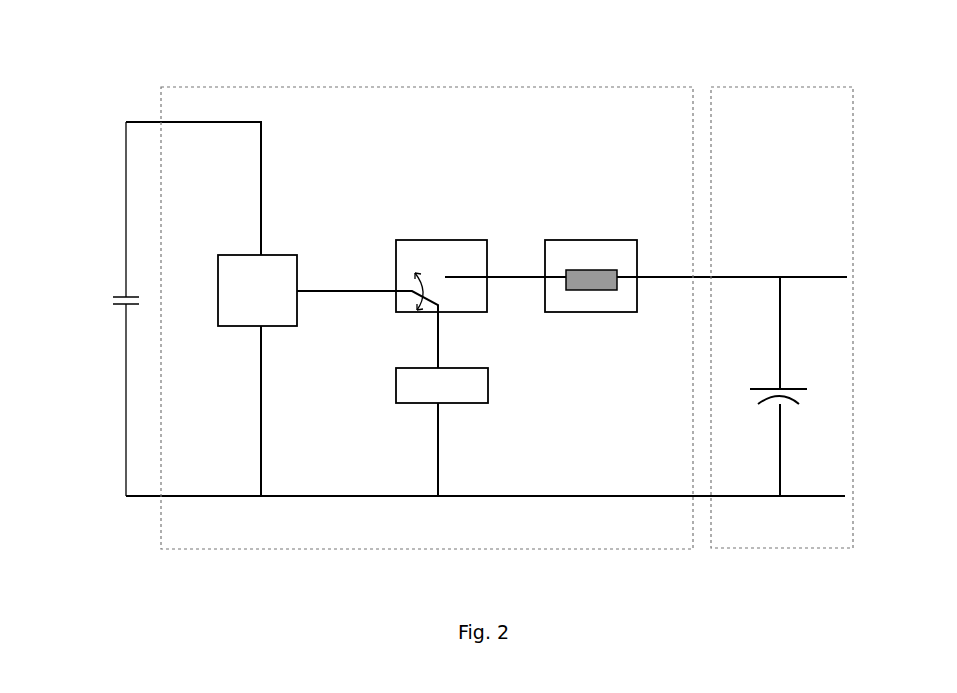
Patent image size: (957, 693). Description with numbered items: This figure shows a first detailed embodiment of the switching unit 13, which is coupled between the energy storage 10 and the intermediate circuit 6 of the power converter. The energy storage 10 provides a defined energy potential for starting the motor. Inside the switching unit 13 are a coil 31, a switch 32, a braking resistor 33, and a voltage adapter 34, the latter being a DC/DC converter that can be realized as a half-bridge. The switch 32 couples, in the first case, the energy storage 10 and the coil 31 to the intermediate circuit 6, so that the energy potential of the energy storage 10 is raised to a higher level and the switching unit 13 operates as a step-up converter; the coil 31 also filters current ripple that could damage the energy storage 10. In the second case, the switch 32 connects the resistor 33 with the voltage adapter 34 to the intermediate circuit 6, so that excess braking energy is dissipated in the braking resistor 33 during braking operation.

The intermediate circuit 6 is at (127, 283).
The energy storage 10 is at (782, 87).
The switching unit 13 is at (513, 86).
The coil 31 is at (558, 242).
The switch 32 is at (427, 235).
The braking resistor 33 is at (474, 402).
The voltage adapter 34 is at (267, 258).